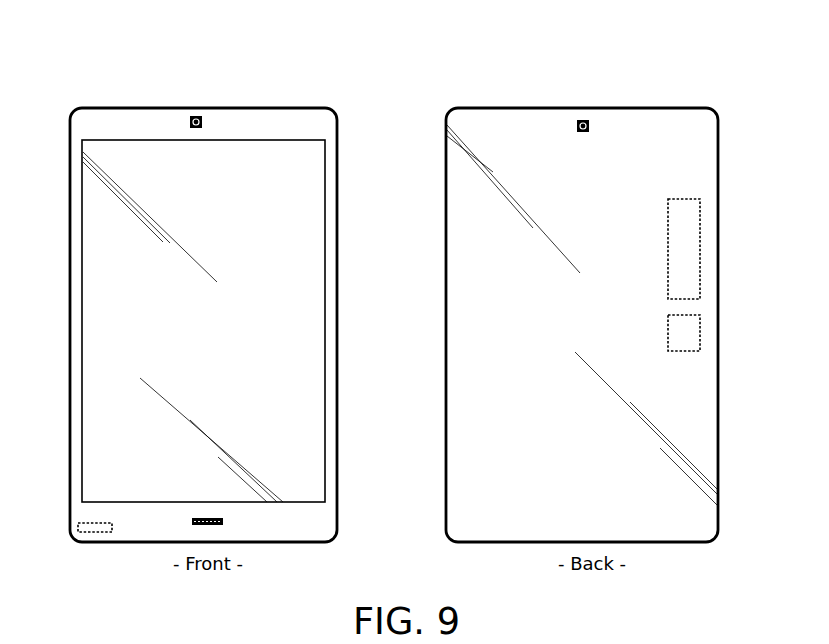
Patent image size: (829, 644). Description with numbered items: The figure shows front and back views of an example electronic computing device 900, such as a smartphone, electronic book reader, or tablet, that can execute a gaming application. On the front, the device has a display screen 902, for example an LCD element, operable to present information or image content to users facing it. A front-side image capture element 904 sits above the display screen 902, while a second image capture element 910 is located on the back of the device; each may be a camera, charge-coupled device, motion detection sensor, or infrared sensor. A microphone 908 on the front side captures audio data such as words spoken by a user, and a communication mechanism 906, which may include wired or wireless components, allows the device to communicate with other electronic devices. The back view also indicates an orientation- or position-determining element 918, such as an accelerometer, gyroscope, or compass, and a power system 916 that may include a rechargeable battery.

The electronic computing device 900 is at (741, 108).
The display screen 902 is at (82, 218).
The image capture element 904 is at (195, 115).
The communication mechanism 906 is at (95, 534).
The microphone 908 is at (225, 523).
The image capture element 910 is at (580, 120).
The power system 916 is at (700, 334).
The orientation- or position-determining element 918 is at (700, 266).